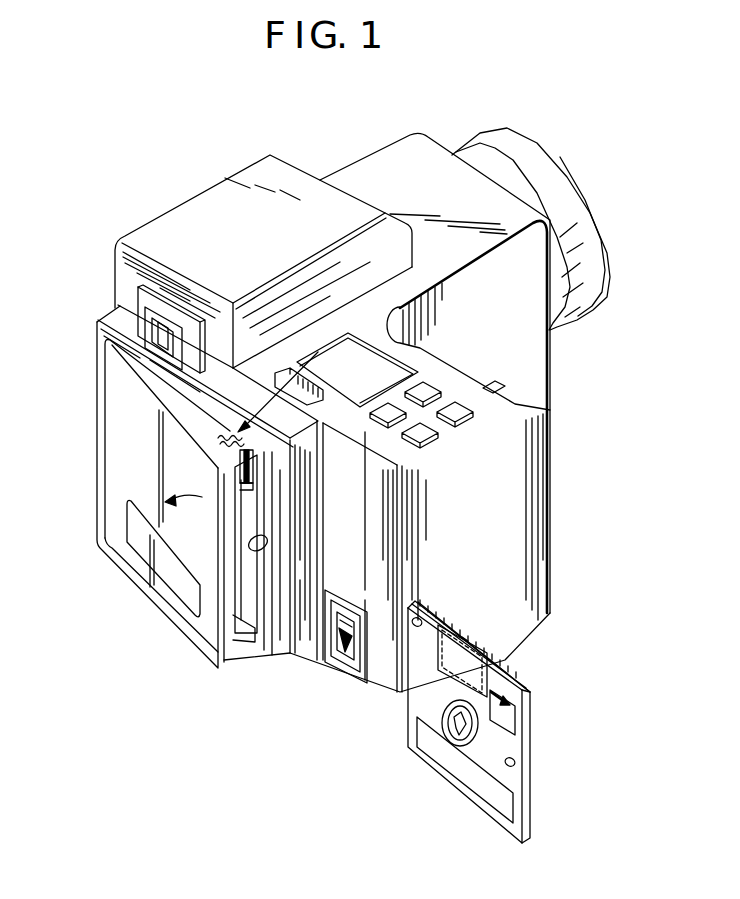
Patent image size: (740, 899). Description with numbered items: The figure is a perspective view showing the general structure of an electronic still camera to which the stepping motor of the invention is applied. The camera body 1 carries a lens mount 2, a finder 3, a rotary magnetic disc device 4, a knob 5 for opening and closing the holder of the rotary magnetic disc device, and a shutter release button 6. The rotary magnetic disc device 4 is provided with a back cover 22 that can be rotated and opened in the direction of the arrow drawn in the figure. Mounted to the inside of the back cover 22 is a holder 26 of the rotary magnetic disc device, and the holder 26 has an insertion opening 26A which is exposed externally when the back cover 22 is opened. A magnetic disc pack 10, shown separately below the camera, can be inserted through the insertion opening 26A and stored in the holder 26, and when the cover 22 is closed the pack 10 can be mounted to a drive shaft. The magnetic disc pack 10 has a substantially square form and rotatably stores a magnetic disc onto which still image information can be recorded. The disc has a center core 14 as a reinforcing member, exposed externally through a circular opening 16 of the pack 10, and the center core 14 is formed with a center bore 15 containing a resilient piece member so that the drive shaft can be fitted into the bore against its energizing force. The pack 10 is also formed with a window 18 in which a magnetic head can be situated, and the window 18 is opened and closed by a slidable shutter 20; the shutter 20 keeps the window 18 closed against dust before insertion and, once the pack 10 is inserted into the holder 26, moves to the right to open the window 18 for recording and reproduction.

The camera body 1 is at (527, 458).
The lens mount 2 is at (490, 146).
The finder 3 is at (115, 277).
The rotary magnetic disc device 4 is at (299, 361).
The knob 5 is at (345, 645).
The shutter release button 6 is at (497, 385).
The magnetic disc pack 10 is at (534, 687).
The center core 14 is at (445, 712).
The center bore 15 is at (450, 727).
The circular opening 16 is at (457, 726).
The window 18 is at (453, 632).
The shutter 20 is at (480, 660).
The back cover 22 is at (124, 457).
The holder 26 is at (243, 470).
The insertion opening 26A is at (251, 500).